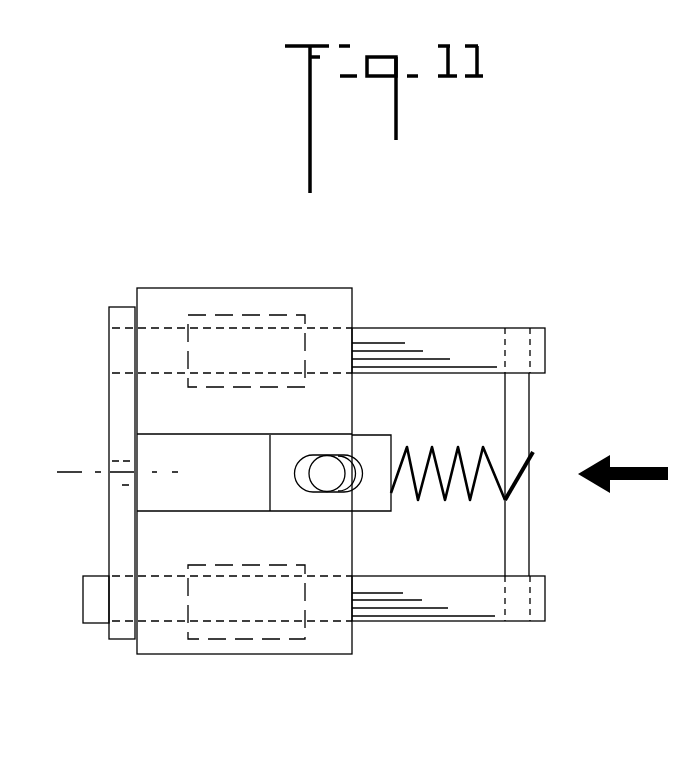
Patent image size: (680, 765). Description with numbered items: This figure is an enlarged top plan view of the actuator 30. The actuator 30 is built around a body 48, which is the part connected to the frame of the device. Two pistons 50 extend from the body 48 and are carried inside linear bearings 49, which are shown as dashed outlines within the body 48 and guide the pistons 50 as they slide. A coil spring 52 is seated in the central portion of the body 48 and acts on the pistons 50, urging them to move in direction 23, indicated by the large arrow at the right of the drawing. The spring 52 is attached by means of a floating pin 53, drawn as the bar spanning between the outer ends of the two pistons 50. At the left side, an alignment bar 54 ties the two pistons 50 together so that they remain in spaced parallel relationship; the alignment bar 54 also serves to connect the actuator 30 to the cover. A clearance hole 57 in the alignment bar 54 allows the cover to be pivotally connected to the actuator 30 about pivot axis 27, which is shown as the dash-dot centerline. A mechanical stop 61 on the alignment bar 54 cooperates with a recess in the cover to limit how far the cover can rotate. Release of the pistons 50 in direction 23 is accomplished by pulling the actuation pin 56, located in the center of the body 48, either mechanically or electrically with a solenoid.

The direction 23 is at (635, 467).
The pivot axis 27 is at (66, 471).
The actuator 30 is at (519, 246).
The body 48 is at (287, 654).
The linear bearings 49 is at (272, 350).
The piston 50 is at (437, 345).
The spring 52 is at (452, 443).
The floating pin 53 is at (512, 522).
The alignment bar 54 is at (118, 423).
The actuation pin 56 is at (327, 474).
The clearance hole 57 is at (117, 477).
The mechanical stop 61 is at (95, 623).